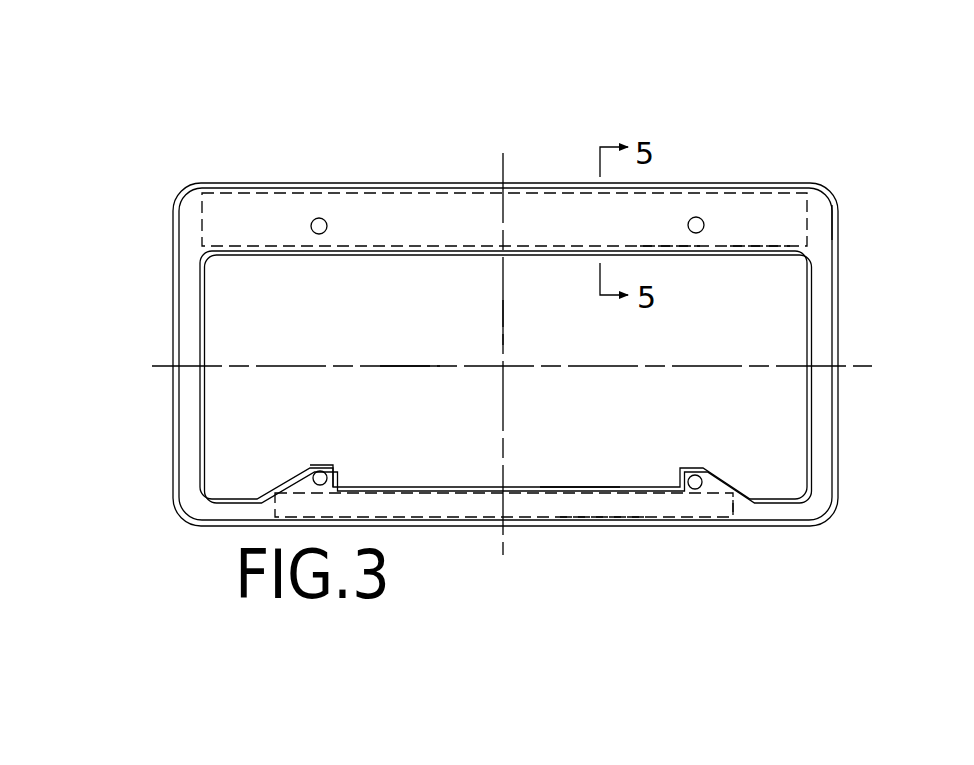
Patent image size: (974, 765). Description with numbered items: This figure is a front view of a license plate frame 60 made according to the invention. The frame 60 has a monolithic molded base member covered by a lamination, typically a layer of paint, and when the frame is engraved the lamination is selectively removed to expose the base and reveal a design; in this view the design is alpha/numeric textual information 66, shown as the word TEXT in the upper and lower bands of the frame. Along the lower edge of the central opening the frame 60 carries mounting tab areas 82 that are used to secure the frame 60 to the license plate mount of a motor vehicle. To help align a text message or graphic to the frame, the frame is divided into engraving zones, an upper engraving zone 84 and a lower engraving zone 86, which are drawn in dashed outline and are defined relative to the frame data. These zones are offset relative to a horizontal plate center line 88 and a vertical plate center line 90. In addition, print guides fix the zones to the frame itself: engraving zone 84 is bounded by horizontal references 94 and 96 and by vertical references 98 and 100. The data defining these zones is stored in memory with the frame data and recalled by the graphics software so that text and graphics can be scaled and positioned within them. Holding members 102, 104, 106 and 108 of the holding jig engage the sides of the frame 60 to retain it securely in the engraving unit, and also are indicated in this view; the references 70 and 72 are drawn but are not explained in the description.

The license plate frame 60 is at (862, 173).
The alpha/numeric textual information 66 is at (468, 258).
The upper slot 70 is at (658, 246).
The lower edge of opening 72 is at (565, 498).
The mounting tab areas 82 is at (340, 466).
The engraving zone 84 is at (251, 213).
The engraving zone 86 is at (380, 517).
The horizontal plate center line 88 is at (405, 369).
The vertical plate center line 90 is at (505, 323).
The horizontal reference 94 is at (730, 198).
The horizontal reference 96 is at (748, 246).
The vertical reference 98 is at (808, 222).
The vertical reference 100 is at (201, 226).
The holding member 102 is at (602, 518).
The holding member 104 is at (730, 490).
The holding member 106 is at (738, 513).
The holding member 108 is at (288, 498).